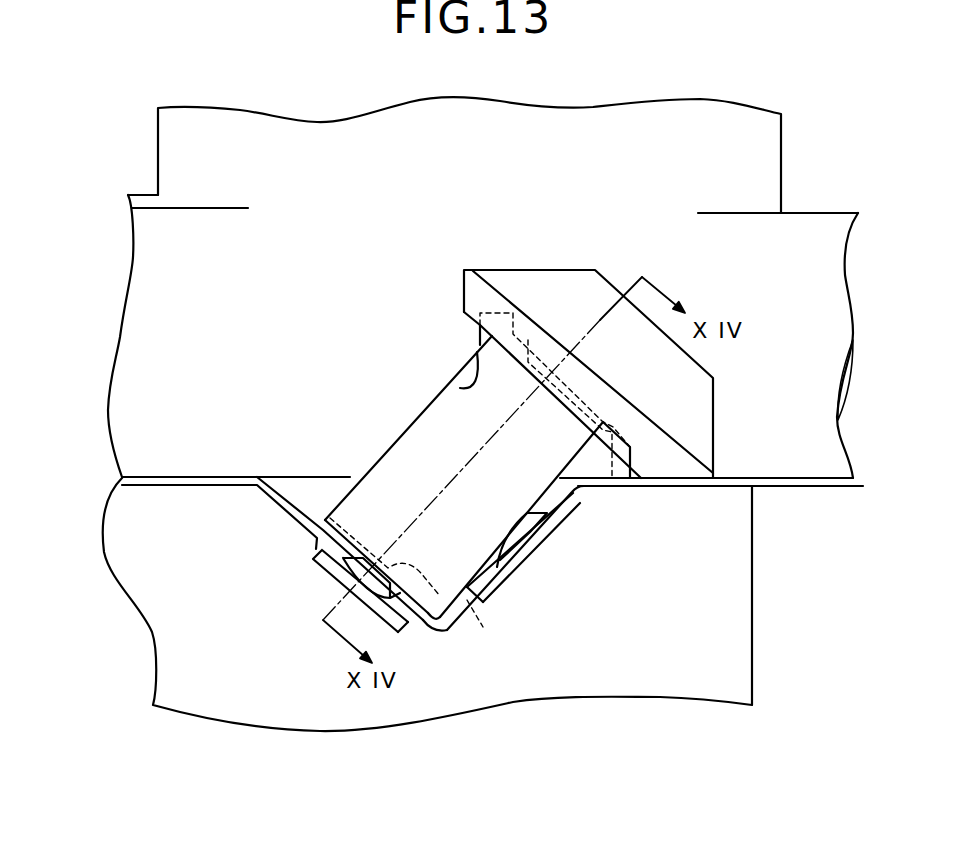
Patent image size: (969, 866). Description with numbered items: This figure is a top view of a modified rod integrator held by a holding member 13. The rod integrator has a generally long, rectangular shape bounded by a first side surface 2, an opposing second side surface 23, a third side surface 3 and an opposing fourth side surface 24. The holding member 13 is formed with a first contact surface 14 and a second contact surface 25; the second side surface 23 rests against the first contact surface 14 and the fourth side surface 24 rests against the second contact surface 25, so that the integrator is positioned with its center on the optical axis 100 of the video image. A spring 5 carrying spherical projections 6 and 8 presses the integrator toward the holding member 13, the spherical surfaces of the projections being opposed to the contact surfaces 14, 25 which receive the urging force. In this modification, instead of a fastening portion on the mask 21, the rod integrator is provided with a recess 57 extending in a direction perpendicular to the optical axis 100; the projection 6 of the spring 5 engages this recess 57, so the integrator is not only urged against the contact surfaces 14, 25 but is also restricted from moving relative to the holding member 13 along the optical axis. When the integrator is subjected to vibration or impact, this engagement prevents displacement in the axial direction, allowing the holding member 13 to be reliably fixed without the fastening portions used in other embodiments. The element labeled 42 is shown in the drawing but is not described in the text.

The first side surface 2 is at (318, 531).
The third side surface 3 is at (570, 440).
The spring 5 is at (440, 632).
The spherical projection 6 is at (520, 533).
The spherical projection 8 is at (358, 568).
The holding member 13 is at (168, 277).
The first contact surface 14 is at (603, 424).
The mask 21 is at (730, 622).
The second side surface 23 is at (531, 326).
The fourth side surface 24 is at (340, 500).
The second contact surface 25 is at (460, 388).
The bent portion 42 is at (428, 615).
The recess 57 is at (460, 612).
The optical axis 100 is at (490, 505).